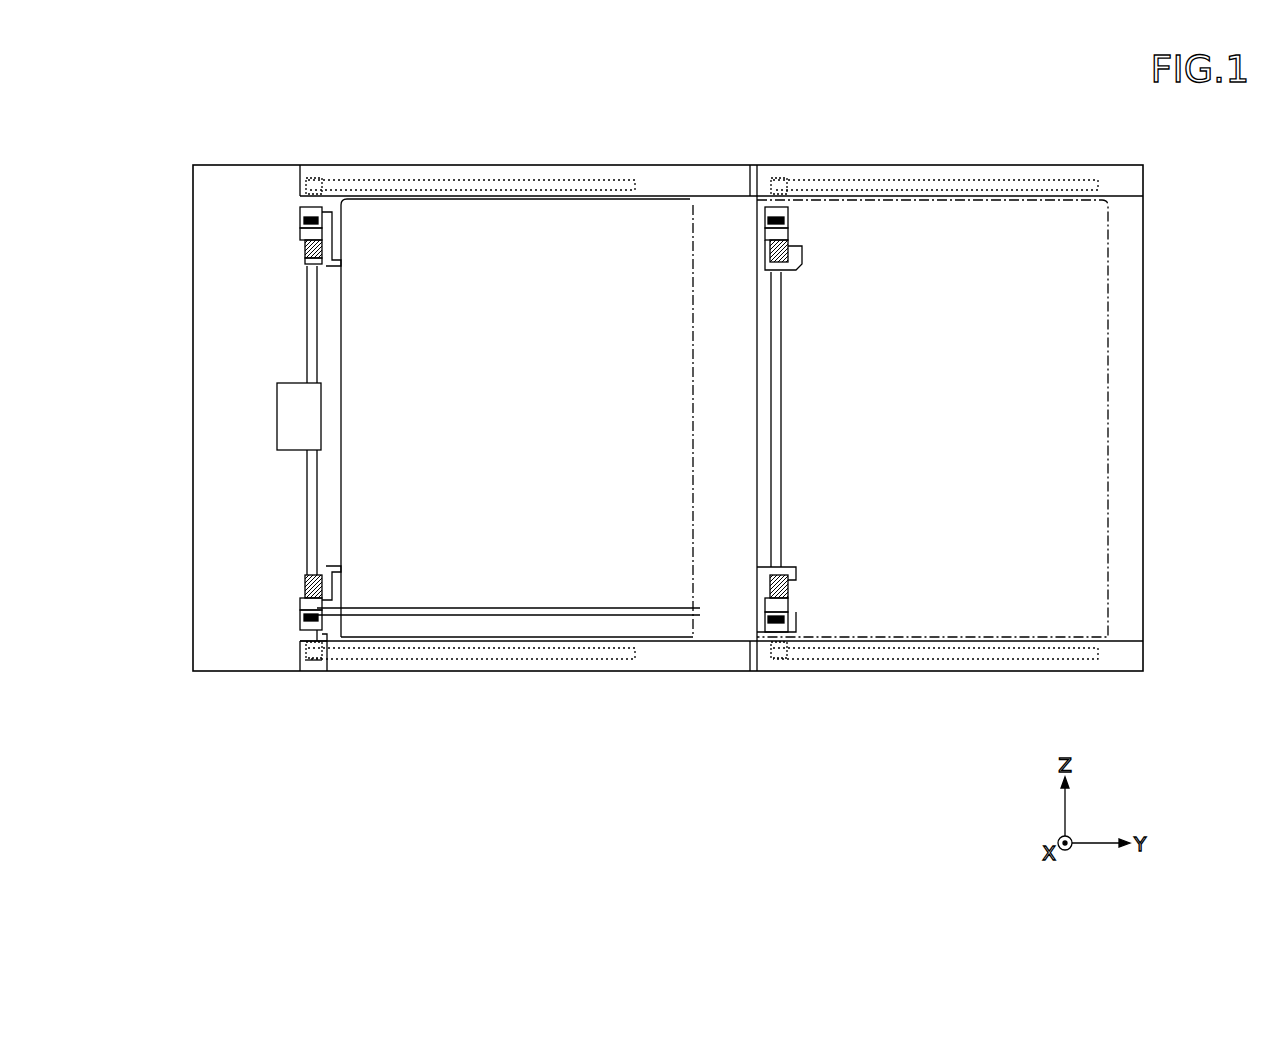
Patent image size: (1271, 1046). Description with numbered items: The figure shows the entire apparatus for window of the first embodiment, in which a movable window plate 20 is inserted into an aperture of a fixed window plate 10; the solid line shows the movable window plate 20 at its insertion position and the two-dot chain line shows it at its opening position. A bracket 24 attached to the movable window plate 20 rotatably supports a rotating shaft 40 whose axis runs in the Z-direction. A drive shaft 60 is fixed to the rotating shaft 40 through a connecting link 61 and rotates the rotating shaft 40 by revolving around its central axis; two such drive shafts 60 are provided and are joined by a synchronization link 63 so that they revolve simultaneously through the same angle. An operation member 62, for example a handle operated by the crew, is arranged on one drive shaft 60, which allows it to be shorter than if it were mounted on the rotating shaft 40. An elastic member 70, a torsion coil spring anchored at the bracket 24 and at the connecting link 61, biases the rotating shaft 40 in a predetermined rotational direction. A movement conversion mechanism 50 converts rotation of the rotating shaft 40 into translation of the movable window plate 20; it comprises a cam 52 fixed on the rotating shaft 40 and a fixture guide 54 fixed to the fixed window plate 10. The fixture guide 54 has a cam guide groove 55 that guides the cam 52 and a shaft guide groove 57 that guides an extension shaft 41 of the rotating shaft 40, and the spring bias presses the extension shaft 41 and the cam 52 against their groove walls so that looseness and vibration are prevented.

The fixed window plate 10 is at (237, 183).
The movable window plate 20 is at (561, 235).
The bracket 24 is at (324, 265).
The rotating shaft 40 is at (303, 637).
The extension shaft 41 is at (310, 637).
The movement conversion mechanism 50 is at (468, 163).
The cam 52 is at (322, 188).
The fixture guide 54 is at (403, 180).
The cam guide groove 55 is at (325, 640).
The shaft guide groove 57 is at (317, 640).
The drive shaft 60 is at (777, 323).
The connecting link 61 is at (300, 233).
The operation member 62 is at (287, 417).
The synchronization link 63 is at (455, 608).
The elastic member 70 is at (302, 212).